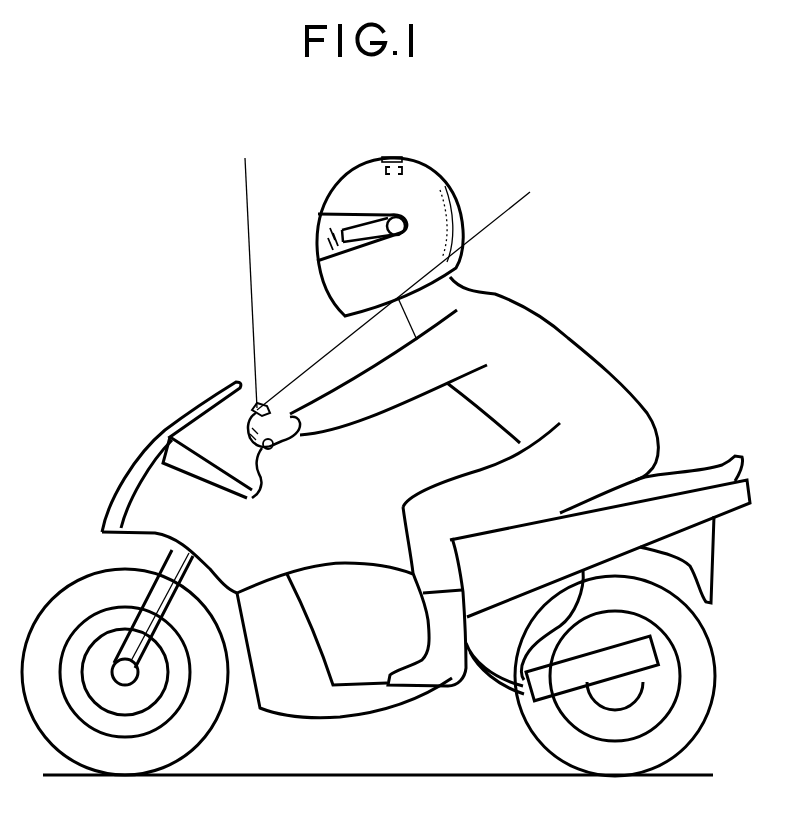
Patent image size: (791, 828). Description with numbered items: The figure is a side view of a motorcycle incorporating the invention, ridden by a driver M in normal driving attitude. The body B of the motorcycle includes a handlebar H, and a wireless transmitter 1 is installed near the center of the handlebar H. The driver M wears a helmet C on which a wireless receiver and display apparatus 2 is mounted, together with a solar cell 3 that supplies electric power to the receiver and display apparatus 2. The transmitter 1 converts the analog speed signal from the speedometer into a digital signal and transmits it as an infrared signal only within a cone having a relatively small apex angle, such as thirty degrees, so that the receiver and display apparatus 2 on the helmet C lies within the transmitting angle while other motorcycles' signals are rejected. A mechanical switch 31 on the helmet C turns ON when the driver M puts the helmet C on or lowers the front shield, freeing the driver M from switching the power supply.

The wireless transmitter 1 is at (253, 407).
The wireless receiver and display apparatus 2 is at (367, 216).
The solar cell 3 is at (400, 153).
The mechanical switch 31 is at (402, 171).
The helmet C is at (401, 228).
The driver M is at (530, 330).
The handlebar H is at (281, 421).
The body B is at (98, 554).